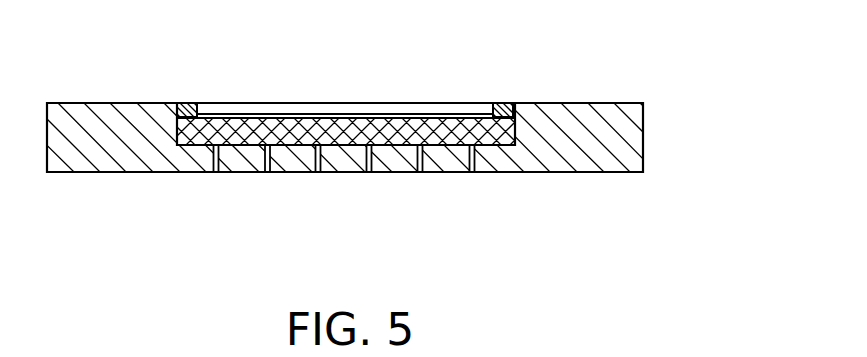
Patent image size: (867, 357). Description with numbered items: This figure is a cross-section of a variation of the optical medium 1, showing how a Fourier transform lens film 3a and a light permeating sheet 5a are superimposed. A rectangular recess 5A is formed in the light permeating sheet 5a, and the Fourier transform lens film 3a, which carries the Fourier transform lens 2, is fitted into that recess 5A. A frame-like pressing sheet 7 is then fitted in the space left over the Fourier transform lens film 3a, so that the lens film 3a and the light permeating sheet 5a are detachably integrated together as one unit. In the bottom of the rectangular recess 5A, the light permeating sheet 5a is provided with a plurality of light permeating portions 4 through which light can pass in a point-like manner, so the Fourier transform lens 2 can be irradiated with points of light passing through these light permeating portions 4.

The sensor device 1 is at (652, 75).
The Fourier transform lens 2 is at (312, 118).
The Fourier transform lens film 3a is at (394, 110).
The channels 4 is at (369, 174).
The light permeating sheet 5a is at (633, 130).
The rectangular recess 5A is at (220, 105).
The frame-like pressing sheet 7 is at (185, 103).